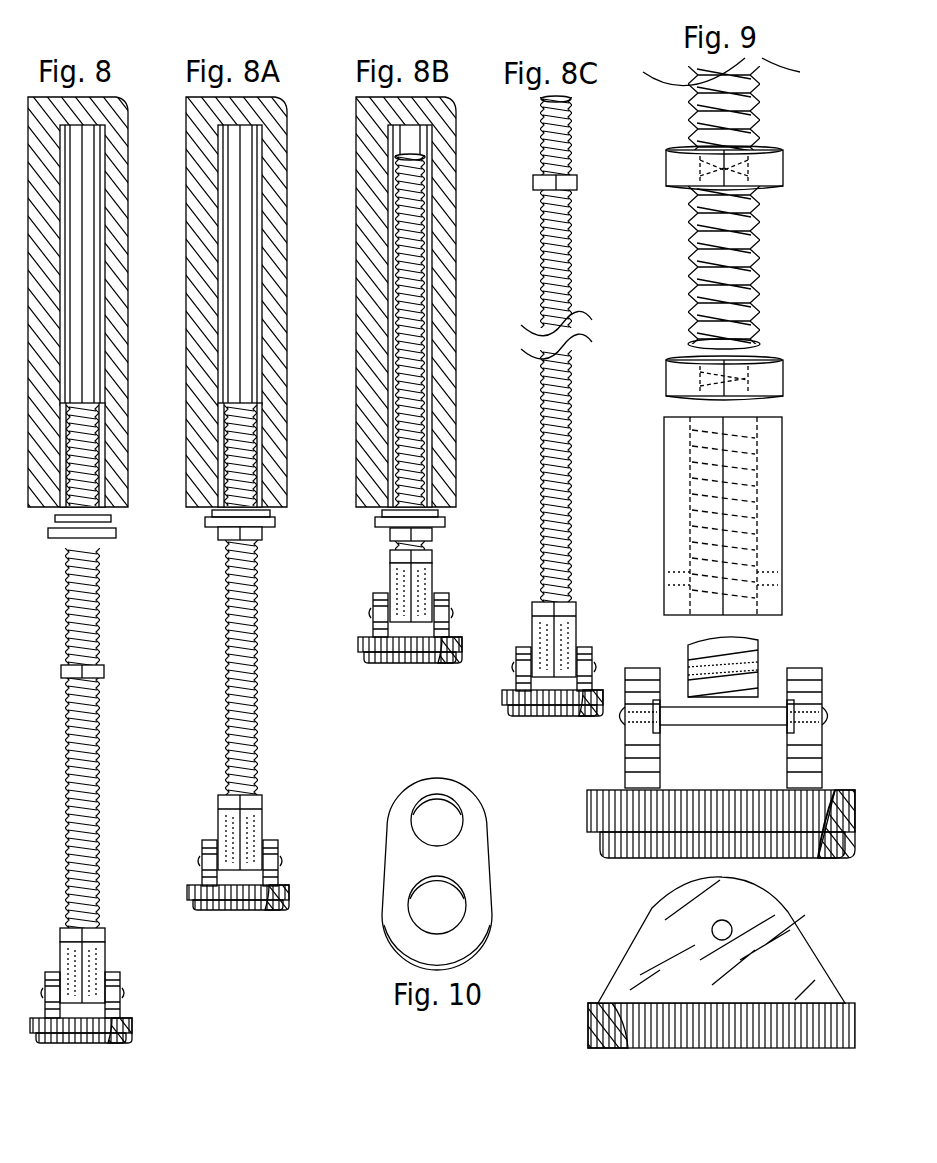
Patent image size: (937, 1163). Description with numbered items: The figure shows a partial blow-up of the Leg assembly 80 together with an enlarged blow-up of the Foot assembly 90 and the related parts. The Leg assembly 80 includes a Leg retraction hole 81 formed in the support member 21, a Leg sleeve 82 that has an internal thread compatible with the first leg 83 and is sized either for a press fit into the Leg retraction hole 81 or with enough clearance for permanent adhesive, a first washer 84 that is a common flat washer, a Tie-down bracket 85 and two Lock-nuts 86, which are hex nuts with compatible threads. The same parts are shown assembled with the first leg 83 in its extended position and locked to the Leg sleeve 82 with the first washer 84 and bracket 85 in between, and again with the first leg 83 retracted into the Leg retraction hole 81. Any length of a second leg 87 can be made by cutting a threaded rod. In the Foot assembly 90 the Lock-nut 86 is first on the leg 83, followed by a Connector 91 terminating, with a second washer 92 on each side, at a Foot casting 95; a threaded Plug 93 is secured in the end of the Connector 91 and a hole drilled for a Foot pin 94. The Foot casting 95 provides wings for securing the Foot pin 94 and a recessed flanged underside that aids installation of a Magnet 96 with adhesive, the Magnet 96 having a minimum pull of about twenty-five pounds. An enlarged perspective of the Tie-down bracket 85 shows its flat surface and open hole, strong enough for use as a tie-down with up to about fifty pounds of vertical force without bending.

In FIG. 8, the support member 21 is at (127, 160).
In FIG. 8A, the support member 21 is at (236, 302).
In FIG. 8B, the support member 21 is at (406, 302).
In FIG. 8, the Leg assembly 80 is at (115, 740).
In FIG. 8A, the Leg assembly 80 is at (275, 668).
In FIG. 8, the Leg retraction hole 81 is at (88, 313).
In FIG. 8A, the Leg retraction hole 81 is at (240, 265).
In FIG. 8B, the Leg retraction hole 81 is at (410, 316).
In FIG. 8, the Leg sleeve 82 is at (107, 443).
In FIG. 8A, the Leg sleeve 82 is at (240, 455).
In FIG. 8, the Leg #1 83 is at (100, 812).
In FIG. 8A, the Leg #1 83 is at (270, 633).
In FIG. 8B, the Leg #1 83 is at (410, 330).
In FIG. 9, the Leg #1 83 is at (755, 280).
In FIG. 8, the Washer #1 84 is at (113, 519).
In FIG. 8A, the Washer #1 84 is at (270, 511).
In FIG. 8B, the Washer #1 84 is at (410, 513).
In FIG. 8, the Tie-down bracket 85 is at (57, 540).
In FIG. 8A, the Tie-down bracket 85 is at (212, 528).
In FIG. 8B, the Tie-down bracket 85 is at (410, 522).
In FIG. 10, the Tie-down bracket 85 is at (388, 942).
In FIG. 8, the Lock-nuts 86 is at (67, 679).
In FIG. 8A, the Lock-nuts 86 is at (263, 542).
In FIG. 8B, the Lock-nuts 86 is at (434, 536).
In FIG. 8C, the Lock-nuts 86 is at (555, 182).
In FIG. 9, the Lock-nuts 86 is at (783, 152).
In FIG. 8C, the Leg #2 87 is at (540, 447).
In FIG. 8, the Foot assembly 90 is at (131, 981).
In FIG. 8A, the Foot assembly 90 is at (276, 819).
In FIG. 8B, the Foot assembly 90 is at (410, 606).
In FIG. 8C, the Foot assembly 90 is at (587, 628).
In FIG. 9, the Foot assembly 90 is at (703, 724).
In FIG. 9, the Connector 91 is at (782, 532).
In FIG. 9, the Washer #2 92 is at (783, 697).
In FIG. 9, the Plug 93 is at (755, 641).
In FIG. 9, the Foot pin 94 is at (743, 726).
In FIG. 9, the Foot casting 95 is at (587, 812).
In FIG. 9, the Magnet 96 is at (830, 860).